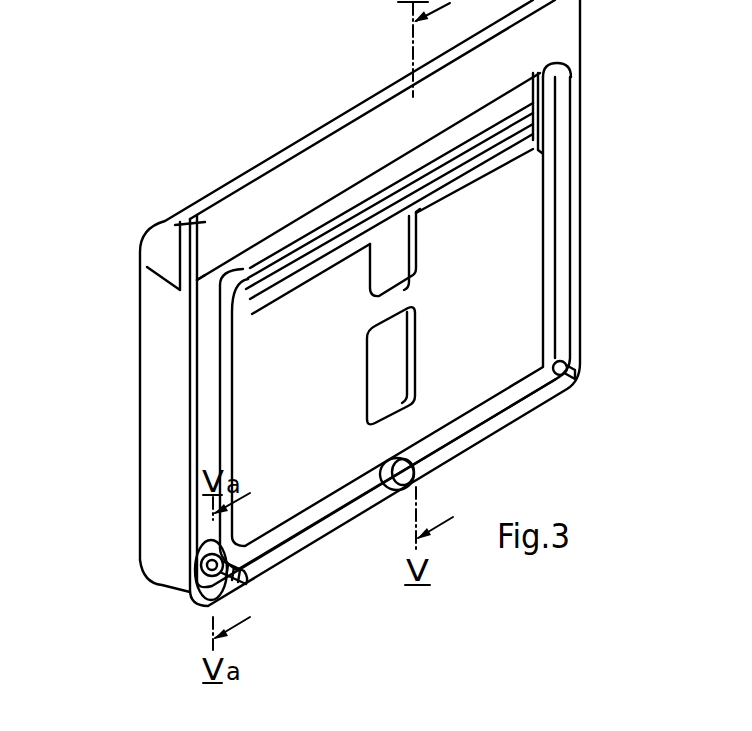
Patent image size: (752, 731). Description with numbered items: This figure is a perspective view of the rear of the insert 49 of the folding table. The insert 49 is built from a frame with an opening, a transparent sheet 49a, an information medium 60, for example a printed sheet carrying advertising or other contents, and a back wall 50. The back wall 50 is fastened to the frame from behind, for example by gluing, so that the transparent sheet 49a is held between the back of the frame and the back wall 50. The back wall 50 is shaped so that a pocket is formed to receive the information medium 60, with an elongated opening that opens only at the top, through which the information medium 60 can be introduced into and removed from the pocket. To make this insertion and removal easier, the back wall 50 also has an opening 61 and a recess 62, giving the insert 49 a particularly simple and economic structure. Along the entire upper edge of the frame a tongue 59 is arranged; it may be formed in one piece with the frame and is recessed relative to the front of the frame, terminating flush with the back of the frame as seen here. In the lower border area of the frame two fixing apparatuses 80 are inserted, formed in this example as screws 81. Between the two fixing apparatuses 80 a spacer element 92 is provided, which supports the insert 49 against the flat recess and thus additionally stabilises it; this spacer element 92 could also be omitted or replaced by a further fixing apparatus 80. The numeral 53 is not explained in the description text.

The insert 49 is at (93, 313).
The transparent sheet 49a is at (343, 207).
The back wall 50 is at (517, 295).
The right rail 53 is at (548, 104).
The tongue 59 is at (210, 222).
The information medium 60 is at (301, 262).
The opening 61 is at (397, 358).
The recess 62 is at (402, 249).
The fixing apparatus 80 is at (49, 0).
The screw 81 is at (212, 608).
The spacer element 92 is at (380, 490).